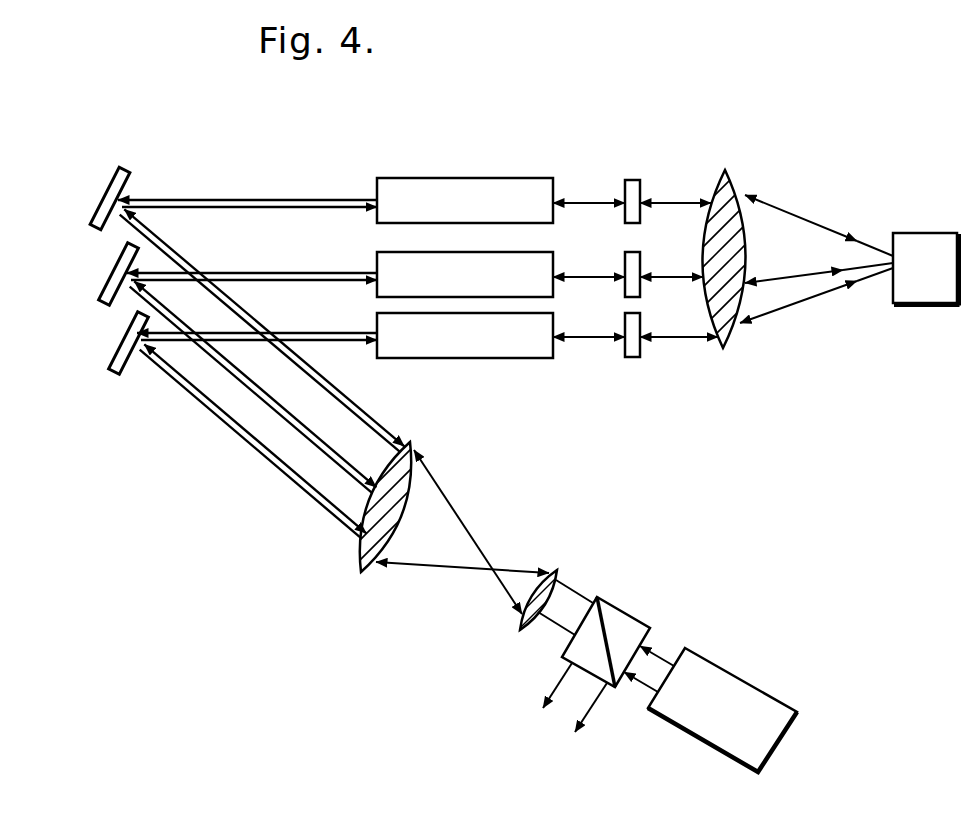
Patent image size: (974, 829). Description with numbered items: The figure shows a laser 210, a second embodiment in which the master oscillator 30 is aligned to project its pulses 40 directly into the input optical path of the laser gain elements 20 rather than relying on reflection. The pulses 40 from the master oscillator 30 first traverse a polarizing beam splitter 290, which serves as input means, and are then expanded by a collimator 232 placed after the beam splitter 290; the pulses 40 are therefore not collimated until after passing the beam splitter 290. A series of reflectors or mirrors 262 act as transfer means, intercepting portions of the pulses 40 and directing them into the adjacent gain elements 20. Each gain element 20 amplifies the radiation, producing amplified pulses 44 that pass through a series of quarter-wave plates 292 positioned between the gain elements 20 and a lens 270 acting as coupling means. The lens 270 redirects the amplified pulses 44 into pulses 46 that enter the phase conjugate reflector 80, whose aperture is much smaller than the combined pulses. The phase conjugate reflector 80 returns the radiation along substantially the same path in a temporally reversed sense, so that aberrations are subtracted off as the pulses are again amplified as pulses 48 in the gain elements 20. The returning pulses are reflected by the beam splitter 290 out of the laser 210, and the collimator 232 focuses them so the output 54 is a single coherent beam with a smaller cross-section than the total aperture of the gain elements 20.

The laser gain element 20 is at (465, 270).
The master oscillator 30 is at (722, 710).
The pulses 40 is at (667, 652).
The amplified pulses 44 is at (635, 270).
The redirected pulses 46 is at (816, 261).
The again amplified pulses 48 is at (261, 354).
The output beam 54 is at (555, 744).
The phase conjugate reflector 80 is at (927, 285).
The laser 210 is at (580, 81).
The collimator 232 is at (505, 655).
The reflectors or mirrors 262 is at (91, 270).
The lens 270 is at (725, 300).
The polarizing beam splitter 290 is at (621, 630).
The quarter-wave plates 292 is at (657, 268).